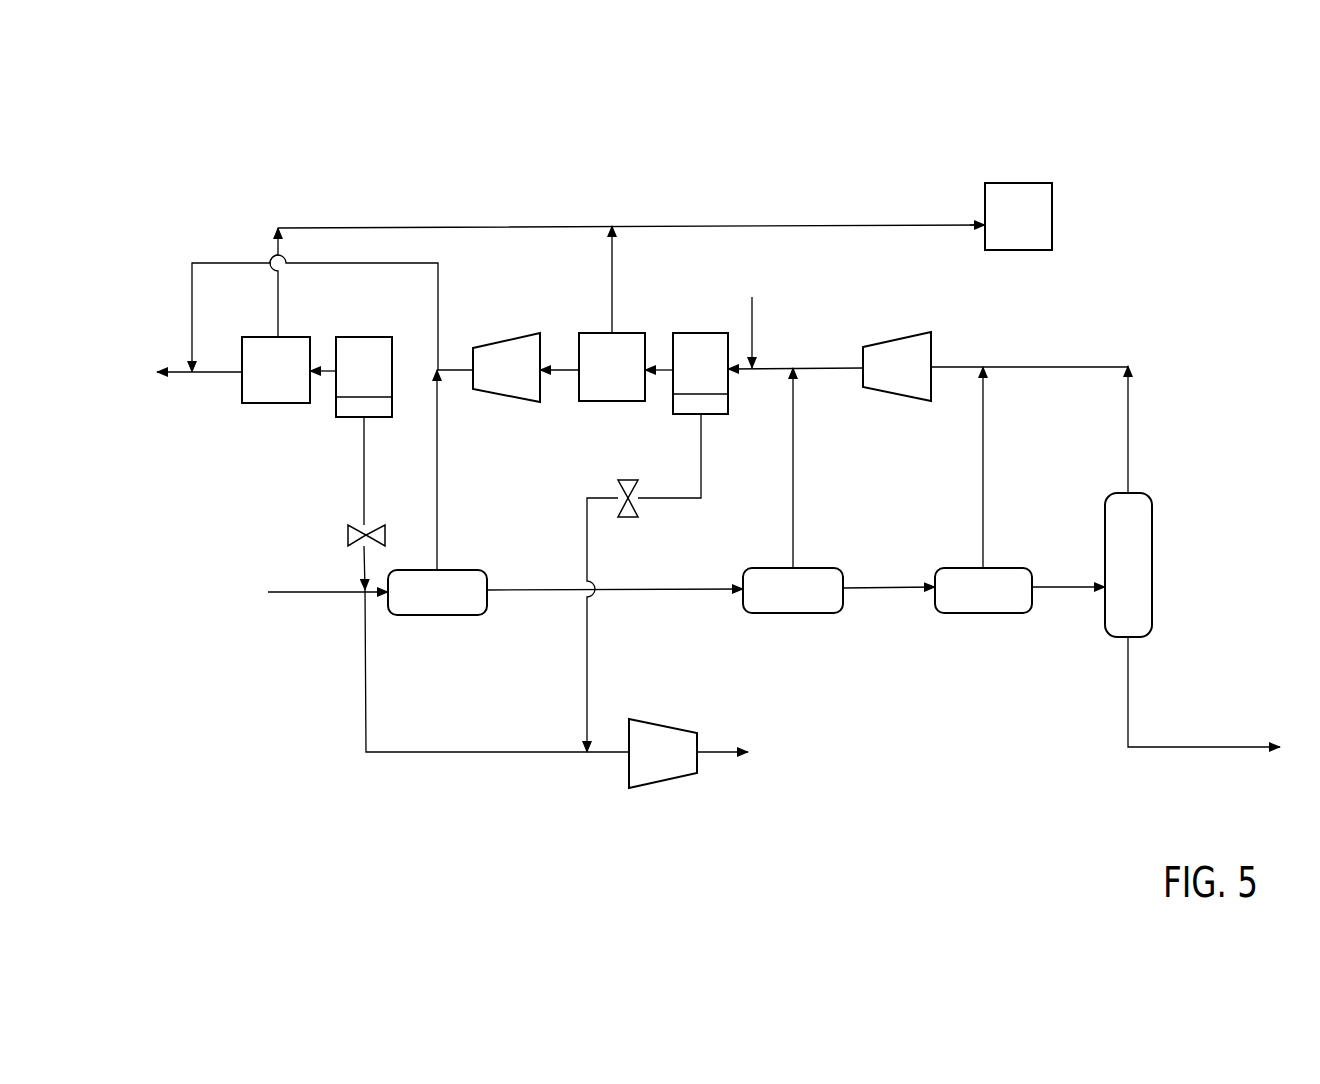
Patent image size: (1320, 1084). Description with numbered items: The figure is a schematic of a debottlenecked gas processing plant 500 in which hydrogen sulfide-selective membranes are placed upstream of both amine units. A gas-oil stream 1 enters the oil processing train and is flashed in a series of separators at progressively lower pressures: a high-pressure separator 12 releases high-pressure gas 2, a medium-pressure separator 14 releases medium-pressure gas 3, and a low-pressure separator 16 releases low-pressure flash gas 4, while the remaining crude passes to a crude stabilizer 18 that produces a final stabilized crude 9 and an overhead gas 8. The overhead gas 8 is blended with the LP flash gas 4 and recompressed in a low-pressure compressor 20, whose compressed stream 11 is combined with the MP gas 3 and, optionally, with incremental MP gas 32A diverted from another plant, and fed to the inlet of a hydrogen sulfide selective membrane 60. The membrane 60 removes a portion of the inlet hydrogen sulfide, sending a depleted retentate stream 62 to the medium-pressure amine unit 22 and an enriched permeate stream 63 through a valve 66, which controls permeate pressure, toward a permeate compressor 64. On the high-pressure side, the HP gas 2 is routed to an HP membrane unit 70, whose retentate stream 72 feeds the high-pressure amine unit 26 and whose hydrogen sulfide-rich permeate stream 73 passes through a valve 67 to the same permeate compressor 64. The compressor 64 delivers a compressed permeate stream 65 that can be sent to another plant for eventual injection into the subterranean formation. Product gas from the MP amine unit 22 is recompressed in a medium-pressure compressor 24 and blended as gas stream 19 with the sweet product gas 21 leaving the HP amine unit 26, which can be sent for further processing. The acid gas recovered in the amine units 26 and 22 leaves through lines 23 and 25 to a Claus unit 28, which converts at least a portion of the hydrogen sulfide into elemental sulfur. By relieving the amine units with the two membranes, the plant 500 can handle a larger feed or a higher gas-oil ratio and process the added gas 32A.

The plant 500 is at (486, 135).
The gas-oil stream 1 is at (316, 592).
The high-pressure gas 2 is at (438, 440).
The medium-pressure gas 3 is at (793, 493).
The low-pressure flash gas 4 is at (983, 492).
The overhead gas 8 is at (1128, 420).
The stabilized crude 9 is at (1213, 699).
The compressed stream 11 is at (825, 368).
The high-pressure separator 12 is at (426, 604).
The medium-pressure separator 14 is at (782, 602).
The low-pressure separator 16 is at (972, 602).
The crude stabilizer 18 is at (1117, 574).
The gas stream 19 is at (232, 262).
The low-pressure compressor 20 is at (886, 379).
The product gas 21 is at (185, 372).
The medium-pressure amine unit 22 is at (601, 379).
The hydrogen stream 23 is at (332, 226).
The medium-pressure compressor 24 is at (495, 380).
The overhead stream 25 is at (612, 258).
The high-pressure amine unit 26 is at (265, 382).
The Claus unit 28 is at (1007, 228).
The incremental MP gas 32A is at (757, 321).
The hydrogen sulfide selective membrane 60 is at (702, 333).
The retentate stream 62 is at (663, 385).
The permeate stream 63 is at (701, 470).
The permeate compressor 64 is at (652, 762).
The compressed permeate stream 65 is at (739, 752).
The valve 66 is at (628, 480).
The valve 67 is at (348, 527).
The HP membrane unit 70 is at (366, 337).
The stream from unit 70 to unit 26 72 is at (323, 385).
The permeate stream 73 is at (366, 476).